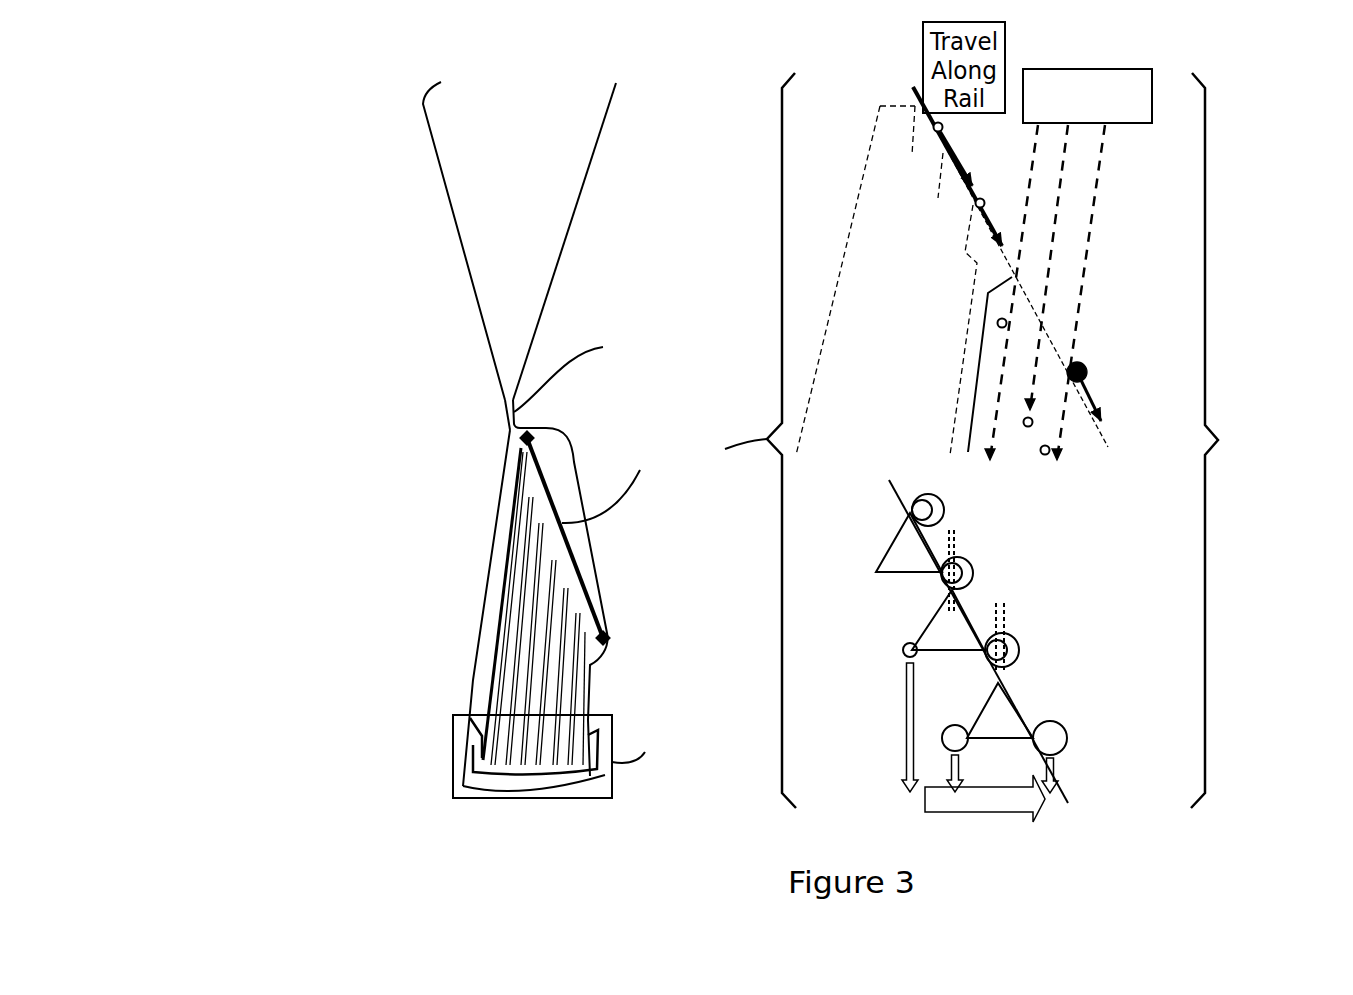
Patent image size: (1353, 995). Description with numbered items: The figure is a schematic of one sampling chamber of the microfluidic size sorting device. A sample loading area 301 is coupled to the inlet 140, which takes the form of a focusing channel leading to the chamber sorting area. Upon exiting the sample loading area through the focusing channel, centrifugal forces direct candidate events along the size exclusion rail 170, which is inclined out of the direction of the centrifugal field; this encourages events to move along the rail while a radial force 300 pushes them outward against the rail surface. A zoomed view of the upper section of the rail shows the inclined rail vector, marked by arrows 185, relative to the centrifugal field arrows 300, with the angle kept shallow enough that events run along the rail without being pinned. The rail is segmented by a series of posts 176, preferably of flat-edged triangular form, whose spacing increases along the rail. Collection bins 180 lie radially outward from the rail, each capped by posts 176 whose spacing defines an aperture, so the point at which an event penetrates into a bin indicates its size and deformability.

The sample loading area 301 is at (522, 203).
The inlet 140 is at (505, 418).
The rail 170 is at (520, 468).
The collection bins 180 is at (455, 752).
The radial force 300 is at (1106, 184).
The rail vector arrows 185 is at (1094, 399).
The posts 176 is at (1021, 699).